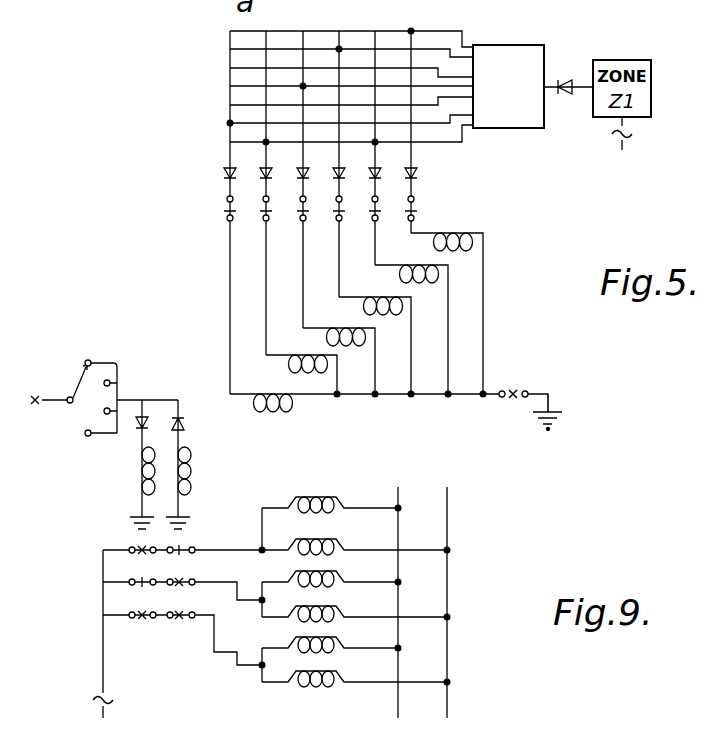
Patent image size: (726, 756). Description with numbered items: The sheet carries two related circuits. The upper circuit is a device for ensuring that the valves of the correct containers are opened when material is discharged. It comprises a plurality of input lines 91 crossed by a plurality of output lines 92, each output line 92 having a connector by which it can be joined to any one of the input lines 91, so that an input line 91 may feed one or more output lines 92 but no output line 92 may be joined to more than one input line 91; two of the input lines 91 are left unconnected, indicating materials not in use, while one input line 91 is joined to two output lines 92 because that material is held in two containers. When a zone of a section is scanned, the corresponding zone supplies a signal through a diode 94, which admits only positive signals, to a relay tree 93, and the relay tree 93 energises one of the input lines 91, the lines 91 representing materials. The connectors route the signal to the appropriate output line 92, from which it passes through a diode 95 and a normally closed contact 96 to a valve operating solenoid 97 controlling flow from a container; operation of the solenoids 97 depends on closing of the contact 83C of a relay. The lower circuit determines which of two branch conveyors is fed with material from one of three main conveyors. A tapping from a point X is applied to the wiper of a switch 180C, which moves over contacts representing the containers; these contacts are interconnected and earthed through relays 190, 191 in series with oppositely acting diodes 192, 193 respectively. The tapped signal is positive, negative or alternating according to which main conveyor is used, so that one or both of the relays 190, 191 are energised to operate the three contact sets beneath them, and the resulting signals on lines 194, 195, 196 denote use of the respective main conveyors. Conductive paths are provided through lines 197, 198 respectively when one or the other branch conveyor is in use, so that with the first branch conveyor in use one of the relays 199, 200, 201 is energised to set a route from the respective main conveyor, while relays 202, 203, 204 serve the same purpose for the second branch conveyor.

In FIG. 5, the input lines 91 is at (248, 142).
In FIG. 5, the output lines 92 is at (230, 80).
In FIG. 5, the relay tree 93 is at (503, 50).
In FIG. 5, the diode 94 is at (565, 92).
In FIG. 5, the diodes 95 is at (262, 171).
In FIG. 5, the normally closed contacts 96 is at (263, 208).
In FIG. 5, the valve operating solenoids 97 is at (282, 355).
In FIG. 5, the relay contact 83C is at (518, 382).
In FIG. 5, the selector switch 180C is at (77, 378).
In FIG. 5, the relay 190 is at (138, 474).
In FIG. 5, the relay 191 is at (188, 471).
In FIG. 5, the diode 192 is at (145, 415).
In FIG. 5, the diode 193 is at (187, 427).
In FIG. 9, the line 194 is at (218, 548).
In FIG. 9, the line 195 is at (205, 580).
In FIG. 9, the line 196 is at (227, 650).
In FIG. 9, the line 197 is at (397, 703).
In FIG. 9, the line 198 is at (447, 498).
In FIG. 9, the relay 199 is at (320, 494).
In FIG. 9, the relay 200 is at (340, 573).
In FIG. 9, the relay 201 is at (340, 640).
In FIG. 9, the relay 202 is at (340, 540).
In FIG. 9, the relay 203 is at (340, 608).
In FIG. 9, the relay 204 is at (340, 674).